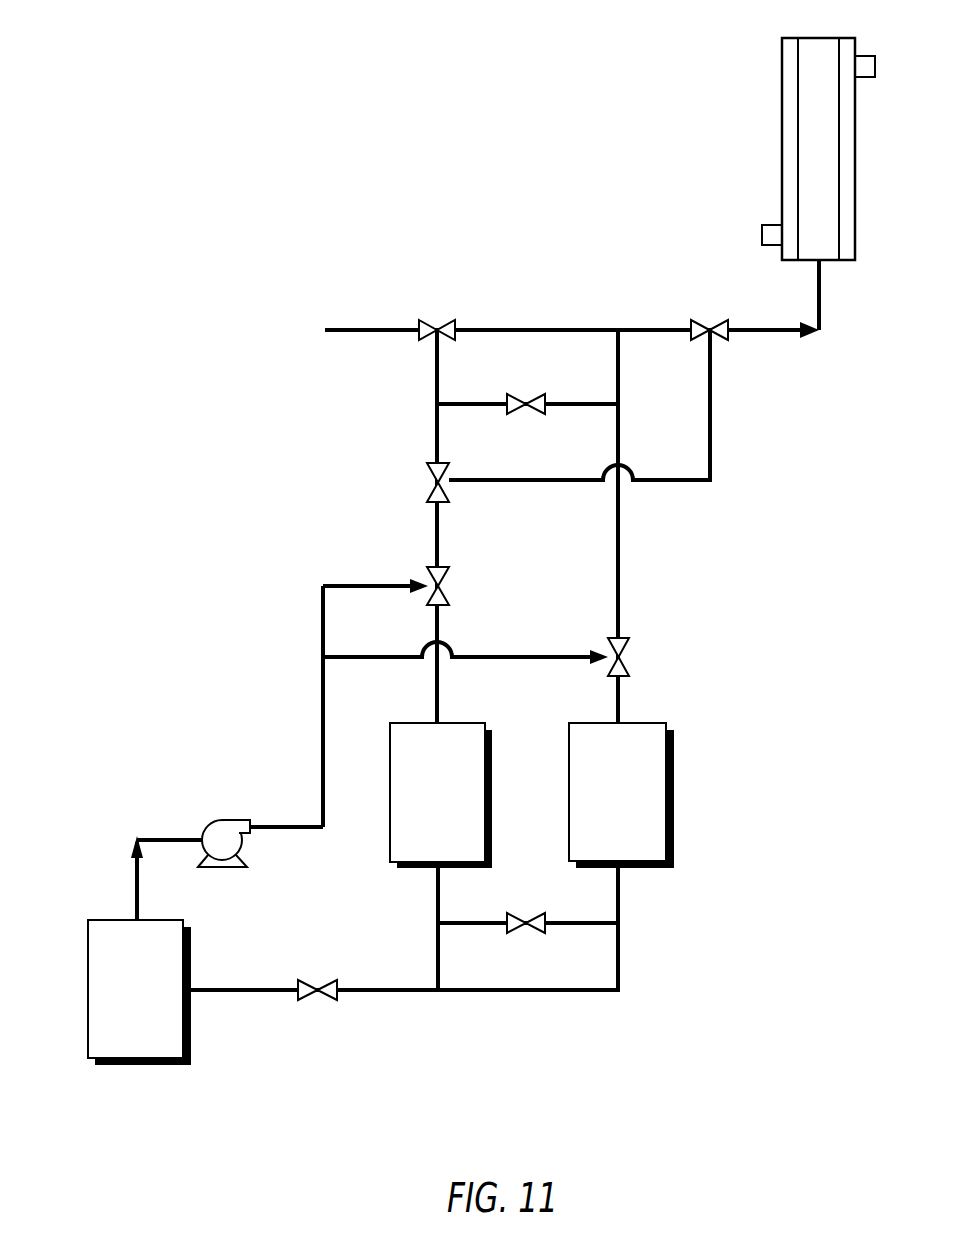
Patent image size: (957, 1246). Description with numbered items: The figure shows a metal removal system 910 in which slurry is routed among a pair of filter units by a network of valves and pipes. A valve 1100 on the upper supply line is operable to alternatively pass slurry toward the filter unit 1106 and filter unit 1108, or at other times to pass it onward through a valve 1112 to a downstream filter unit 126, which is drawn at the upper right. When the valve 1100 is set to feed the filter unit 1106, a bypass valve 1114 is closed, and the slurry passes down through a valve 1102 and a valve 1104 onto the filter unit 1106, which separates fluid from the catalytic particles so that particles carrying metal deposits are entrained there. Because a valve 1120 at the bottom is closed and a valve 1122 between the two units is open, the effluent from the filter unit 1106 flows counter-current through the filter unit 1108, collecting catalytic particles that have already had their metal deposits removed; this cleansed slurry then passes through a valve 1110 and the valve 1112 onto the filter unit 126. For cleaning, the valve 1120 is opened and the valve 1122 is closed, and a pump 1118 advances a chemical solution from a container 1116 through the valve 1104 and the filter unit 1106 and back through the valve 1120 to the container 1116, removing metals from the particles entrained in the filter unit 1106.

The metal removal system 910 is at (226, 338).
The filter unit 126 is at (782, 113).
The valve 1100 is at (437, 320).
The valve 1102 is at (427, 482).
The valve 1104 is at (449, 586).
The filter unit 1106 is at (407, 868).
The filter unit 1108 is at (646, 723).
The valve 1110 is at (629, 657).
The valve 1112 is at (710, 320).
The valve 1114 is at (527, 394).
The container 1116 is at (108, 920).
The pump 1118 is at (225, 820).
The valve 1120 is at (318, 1000).
The valve 1122 is at (526, 933).